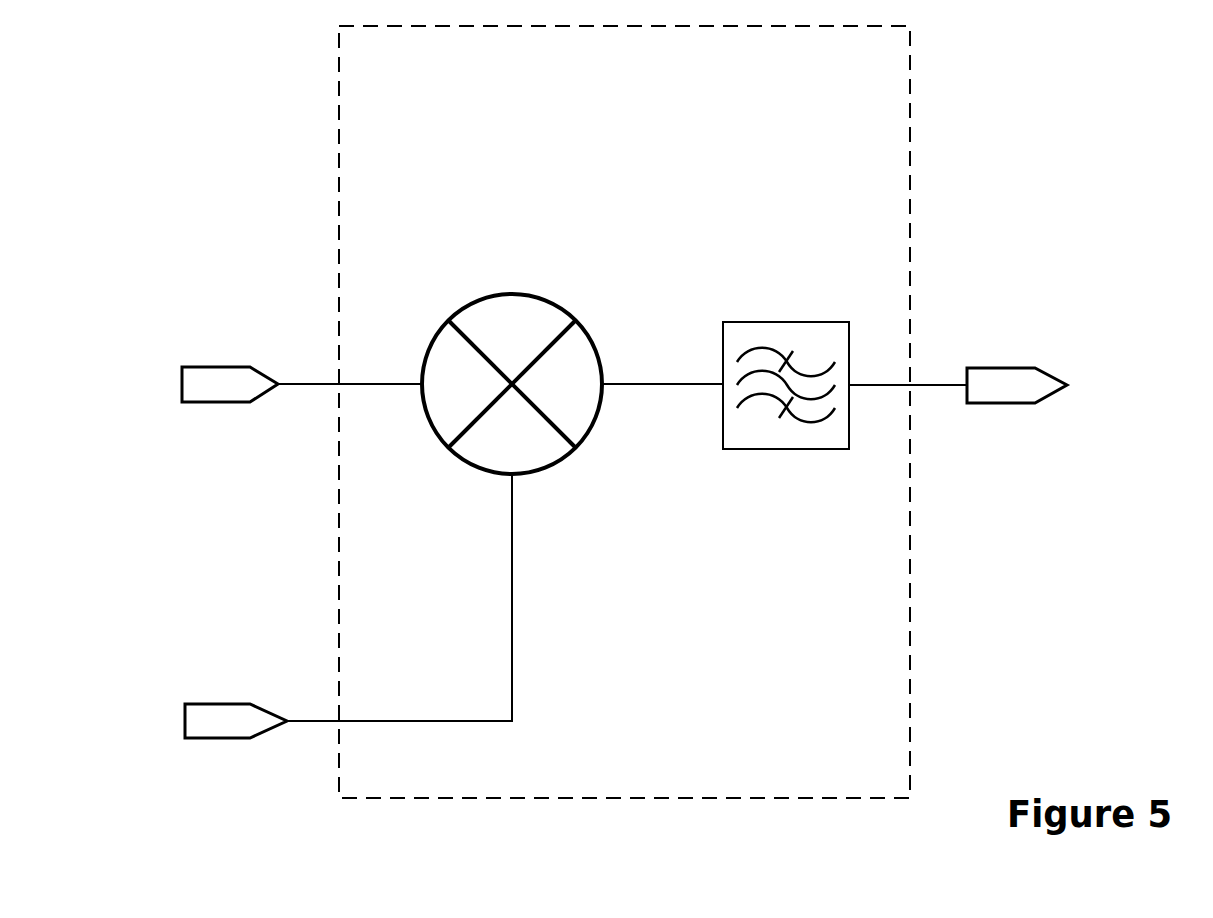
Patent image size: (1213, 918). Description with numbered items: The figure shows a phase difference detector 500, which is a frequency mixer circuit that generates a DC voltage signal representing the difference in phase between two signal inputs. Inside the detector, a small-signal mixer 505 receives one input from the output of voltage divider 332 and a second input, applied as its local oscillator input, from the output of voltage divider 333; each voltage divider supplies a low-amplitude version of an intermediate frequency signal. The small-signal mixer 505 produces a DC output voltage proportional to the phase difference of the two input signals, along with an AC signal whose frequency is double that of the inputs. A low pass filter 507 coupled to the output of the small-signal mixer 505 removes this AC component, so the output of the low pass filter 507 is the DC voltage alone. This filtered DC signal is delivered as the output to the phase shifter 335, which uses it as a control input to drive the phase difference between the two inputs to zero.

The phase difference detector 500 is at (837, 89).
The small-signal mixer 505 is at (542, 279).
The low pass filter 507 is at (813, 299).
The voltage divider 332 is at (203, 524).
The voltage divider 333 is at (203, 864).
The phase shifter 335 is at (990, 506).